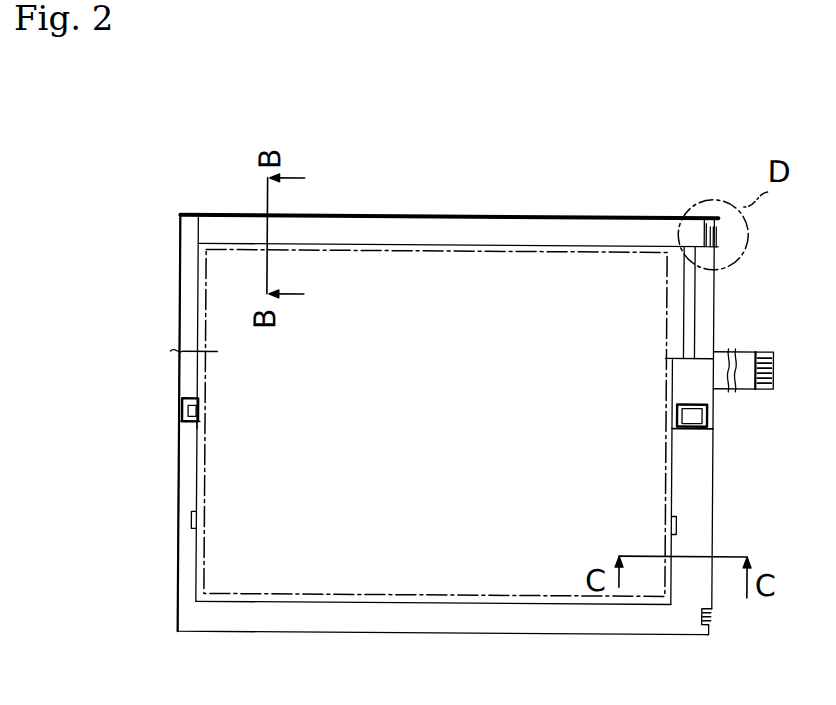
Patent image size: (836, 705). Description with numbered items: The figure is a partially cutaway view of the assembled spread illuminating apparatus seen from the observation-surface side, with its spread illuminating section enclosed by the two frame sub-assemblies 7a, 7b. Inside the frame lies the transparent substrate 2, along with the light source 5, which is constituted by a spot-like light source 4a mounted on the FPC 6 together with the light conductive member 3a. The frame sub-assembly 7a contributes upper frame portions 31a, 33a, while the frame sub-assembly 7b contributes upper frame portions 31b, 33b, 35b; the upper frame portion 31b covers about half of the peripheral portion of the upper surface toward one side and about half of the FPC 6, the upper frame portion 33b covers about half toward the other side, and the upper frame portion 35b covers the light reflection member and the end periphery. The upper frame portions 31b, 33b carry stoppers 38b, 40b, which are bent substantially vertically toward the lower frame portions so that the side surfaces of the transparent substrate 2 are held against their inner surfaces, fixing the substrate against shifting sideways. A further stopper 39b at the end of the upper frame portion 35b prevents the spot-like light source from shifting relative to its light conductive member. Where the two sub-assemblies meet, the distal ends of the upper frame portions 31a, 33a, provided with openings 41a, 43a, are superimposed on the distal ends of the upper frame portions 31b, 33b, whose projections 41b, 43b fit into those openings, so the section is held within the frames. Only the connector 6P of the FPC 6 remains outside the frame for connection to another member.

The transparent substrate 2 is at (197, 277).
The light conductive member 3a is at (590, 240).
The spot-like light source 4a is at (683, 217).
The light source 5 is at (688, 157).
The FPC (flexible printed circuit board) 6 is at (705, 307).
The connector 6P is at (748, 362).
The frame sub-assembly 7a is at (178, 372).
The frame sub-assembly 7b is at (178, 526).
The upper frame portion 31a is at (696, 388).
The upper frame portion 31b is at (692, 467).
The upper frame portion 33a is at (192, 384).
The upper frame portion 33b is at (190, 469).
The upper frame portion 35b is at (446, 612).
The stopper 38b is at (672, 522).
The stopper 39b is at (709, 615).
The stopper 40b is at (200, 520).
The opening 41a is at (678, 407).
The projection 41b is at (693, 420).
The opening 43a is at (199, 410).
The projection 43b is at (200, 427).